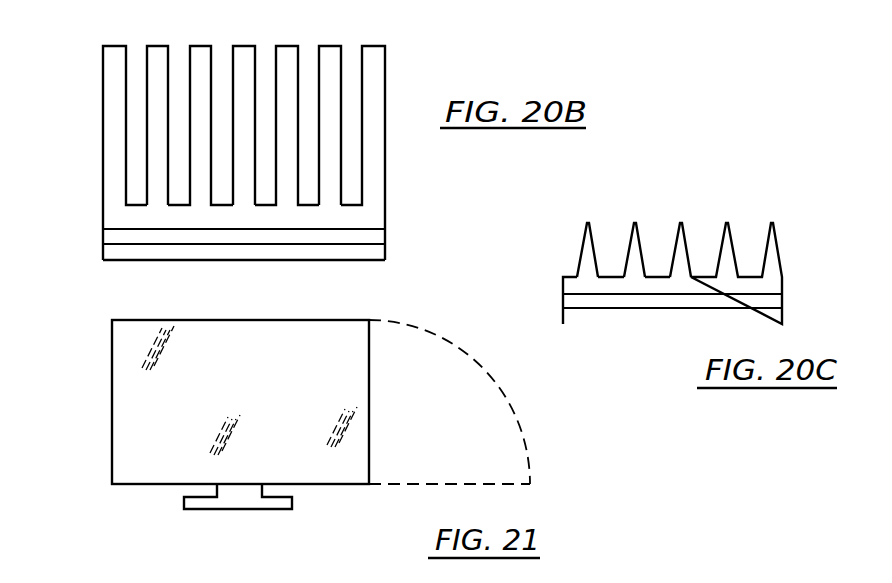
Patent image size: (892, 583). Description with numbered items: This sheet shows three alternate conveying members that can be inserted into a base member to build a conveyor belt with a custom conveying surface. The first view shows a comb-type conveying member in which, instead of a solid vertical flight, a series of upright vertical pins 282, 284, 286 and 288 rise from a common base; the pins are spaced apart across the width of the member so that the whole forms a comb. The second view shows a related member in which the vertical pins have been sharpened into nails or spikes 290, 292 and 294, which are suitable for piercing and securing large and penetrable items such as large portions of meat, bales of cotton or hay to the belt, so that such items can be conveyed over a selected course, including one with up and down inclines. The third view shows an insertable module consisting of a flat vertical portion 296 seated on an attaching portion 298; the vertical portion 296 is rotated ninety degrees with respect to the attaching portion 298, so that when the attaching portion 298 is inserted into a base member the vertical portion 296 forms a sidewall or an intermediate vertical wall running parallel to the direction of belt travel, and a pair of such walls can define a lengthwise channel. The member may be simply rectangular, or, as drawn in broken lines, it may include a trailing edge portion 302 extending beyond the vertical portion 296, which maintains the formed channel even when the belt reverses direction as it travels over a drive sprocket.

In FIG. 20B, the vertical pin 282 is at (103, 70).
In FIG. 20B, the vertical pin 284 is at (158, 46).
In FIG. 20B, the vertical pin 286 is at (202, 47).
In FIG. 20B, the vertical pin 288 is at (320, 47).
In FIG. 20C, the spike 290 is at (582, 232).
In FIG. 20C, the spike 292 is at (634, 226).
In FIG. 20C, the spike 294 is at (683, 223).
In FIG. 21, the vertical portion 296 is at (112, 378).
In FIG. 21, the attaching portion 298 is at (292, 505).
In FIG. 21, the trailing edge portion 302 is at (490, 385).